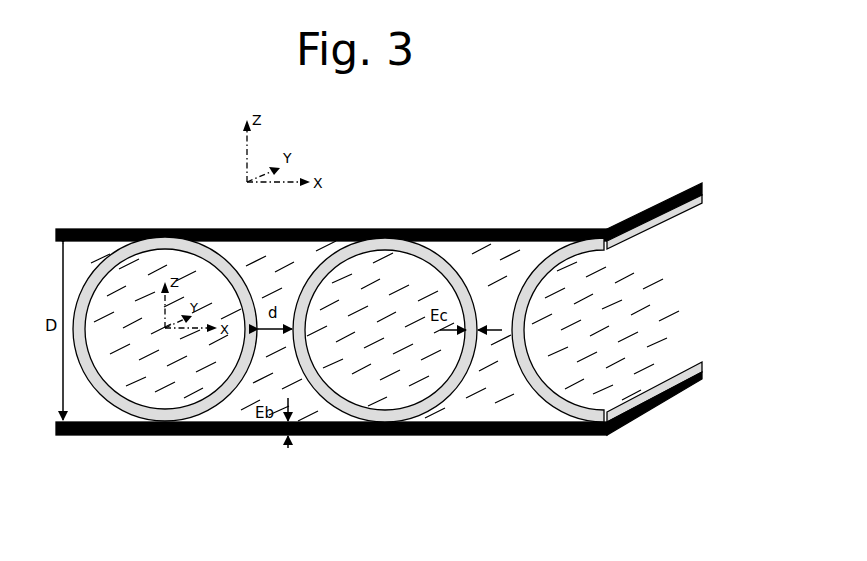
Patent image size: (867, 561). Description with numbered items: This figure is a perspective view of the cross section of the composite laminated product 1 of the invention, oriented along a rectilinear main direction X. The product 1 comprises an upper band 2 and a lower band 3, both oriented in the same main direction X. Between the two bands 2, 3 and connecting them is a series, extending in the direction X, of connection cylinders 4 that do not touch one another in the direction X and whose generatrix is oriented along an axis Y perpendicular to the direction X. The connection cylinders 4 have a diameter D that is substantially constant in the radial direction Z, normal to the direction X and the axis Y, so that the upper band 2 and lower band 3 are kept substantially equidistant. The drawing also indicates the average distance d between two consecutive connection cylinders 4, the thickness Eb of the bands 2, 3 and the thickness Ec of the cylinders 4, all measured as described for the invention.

The composite laminated product 1 is at (450, 207).
The upper band 2 is at (80, 231).
The lower band 3 is at (88, 427).
The connection cylinders 4 is at (140, 412).